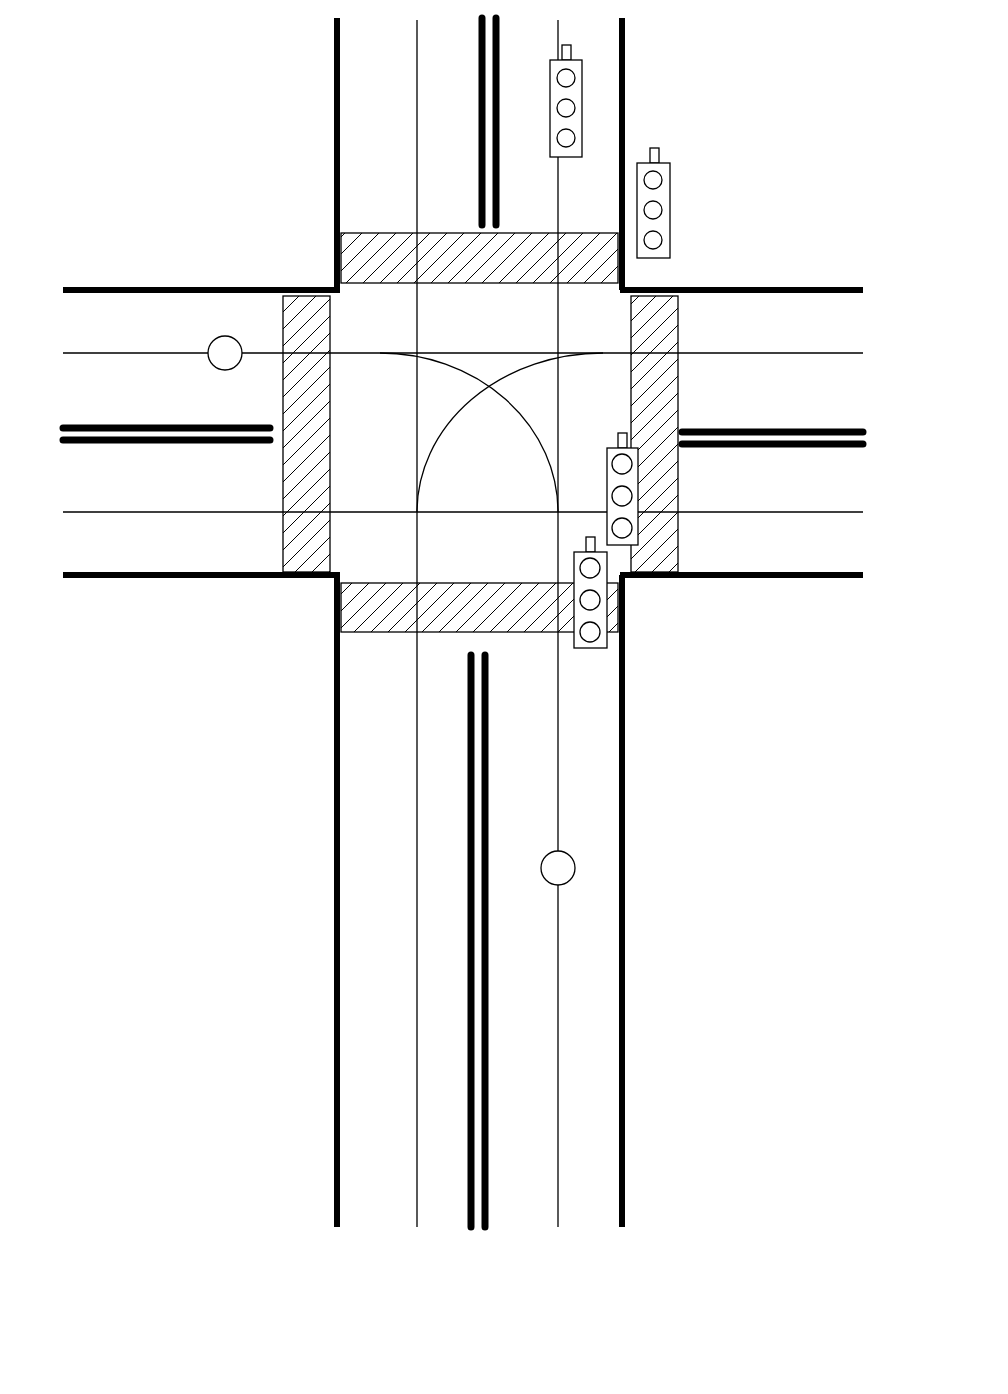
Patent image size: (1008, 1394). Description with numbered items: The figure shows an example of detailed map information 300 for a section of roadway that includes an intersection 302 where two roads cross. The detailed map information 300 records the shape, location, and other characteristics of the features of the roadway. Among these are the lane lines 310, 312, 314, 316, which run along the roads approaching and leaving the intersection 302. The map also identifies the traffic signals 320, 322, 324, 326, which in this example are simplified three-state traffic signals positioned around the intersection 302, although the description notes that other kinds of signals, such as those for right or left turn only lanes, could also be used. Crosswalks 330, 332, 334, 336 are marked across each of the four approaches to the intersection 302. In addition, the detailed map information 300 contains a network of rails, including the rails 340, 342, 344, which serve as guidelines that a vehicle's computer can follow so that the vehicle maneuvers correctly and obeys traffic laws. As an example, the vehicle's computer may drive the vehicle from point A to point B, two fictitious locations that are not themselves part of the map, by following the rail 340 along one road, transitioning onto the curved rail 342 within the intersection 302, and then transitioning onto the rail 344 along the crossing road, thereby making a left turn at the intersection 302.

The detailed map information 300 is at (463, 622).
The intersection 302 is at (363, 548).
The lane line 310 is at (470, 956).
The lane line 312 is at (826, 445).
The lane line 314 is at (480, 85).
The lane line 316 is at (208, 445).
The traffic signal 320 is at (582, 82).
The traffic signal 322 is at (635, 560).
The traffic signal 324 is at (665, 200).
The traffic signal 326 is at (600, 652).
The crosswalk 330 is at (340, 637).
The crosswalk 332 is at (705, 297).
The crosswalk 334 is at (350, 232).
The crosswalk 336 is at (290, 290).
The rail 340 is at (560, 955).
The rail 342 is at (463, 375).
The rail 344 is at (160, 352).